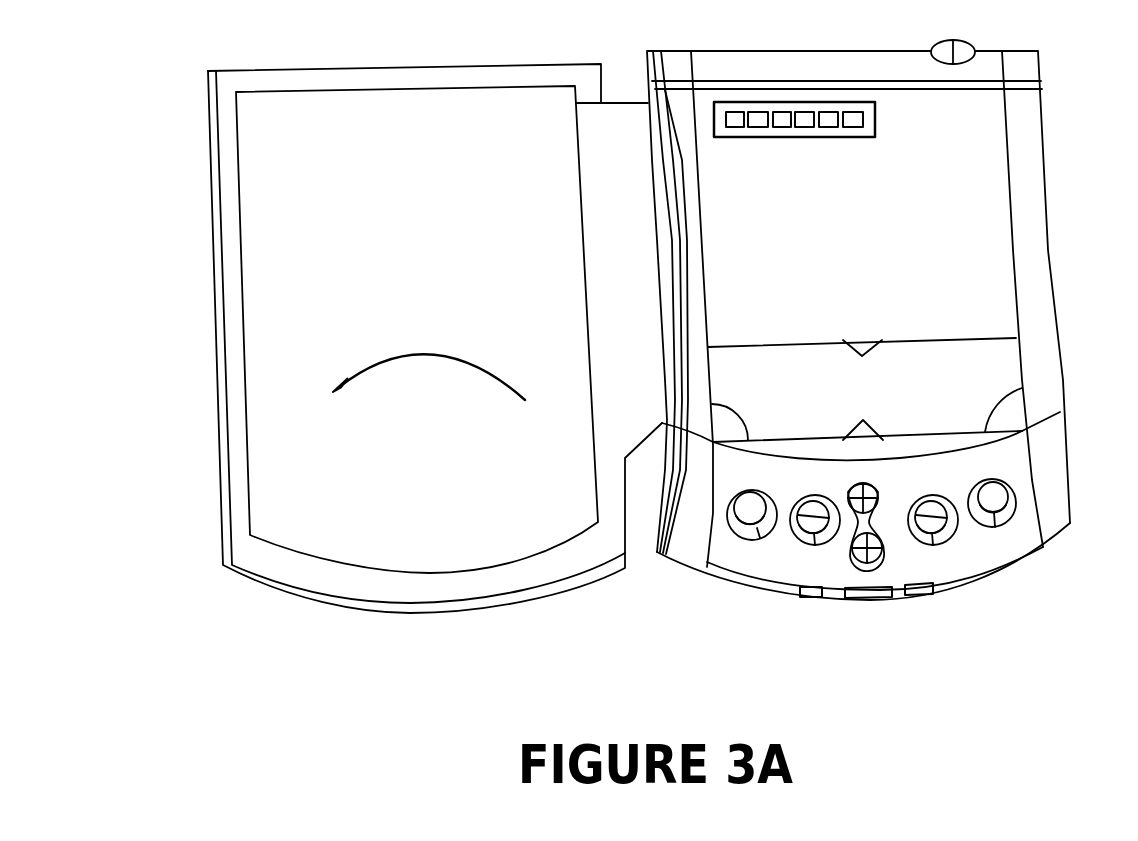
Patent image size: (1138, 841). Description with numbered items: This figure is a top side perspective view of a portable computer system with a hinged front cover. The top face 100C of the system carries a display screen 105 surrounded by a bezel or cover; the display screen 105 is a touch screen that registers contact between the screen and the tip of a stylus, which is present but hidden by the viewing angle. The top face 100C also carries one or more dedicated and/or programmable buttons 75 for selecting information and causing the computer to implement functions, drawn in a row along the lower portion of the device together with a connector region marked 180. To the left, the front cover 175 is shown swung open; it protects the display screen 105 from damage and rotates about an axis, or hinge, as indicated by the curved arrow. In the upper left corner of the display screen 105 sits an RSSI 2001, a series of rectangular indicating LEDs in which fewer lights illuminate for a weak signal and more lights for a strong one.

The front cover 175 is at (362, 587).
The top face 100C is at (1035, 278).
The display screen 105 is at (877, 276).
The RSSI 2001 is at (782, 110).
The connector tab 180 is at (863, 597).
The buttons 75 is at (952, 512).